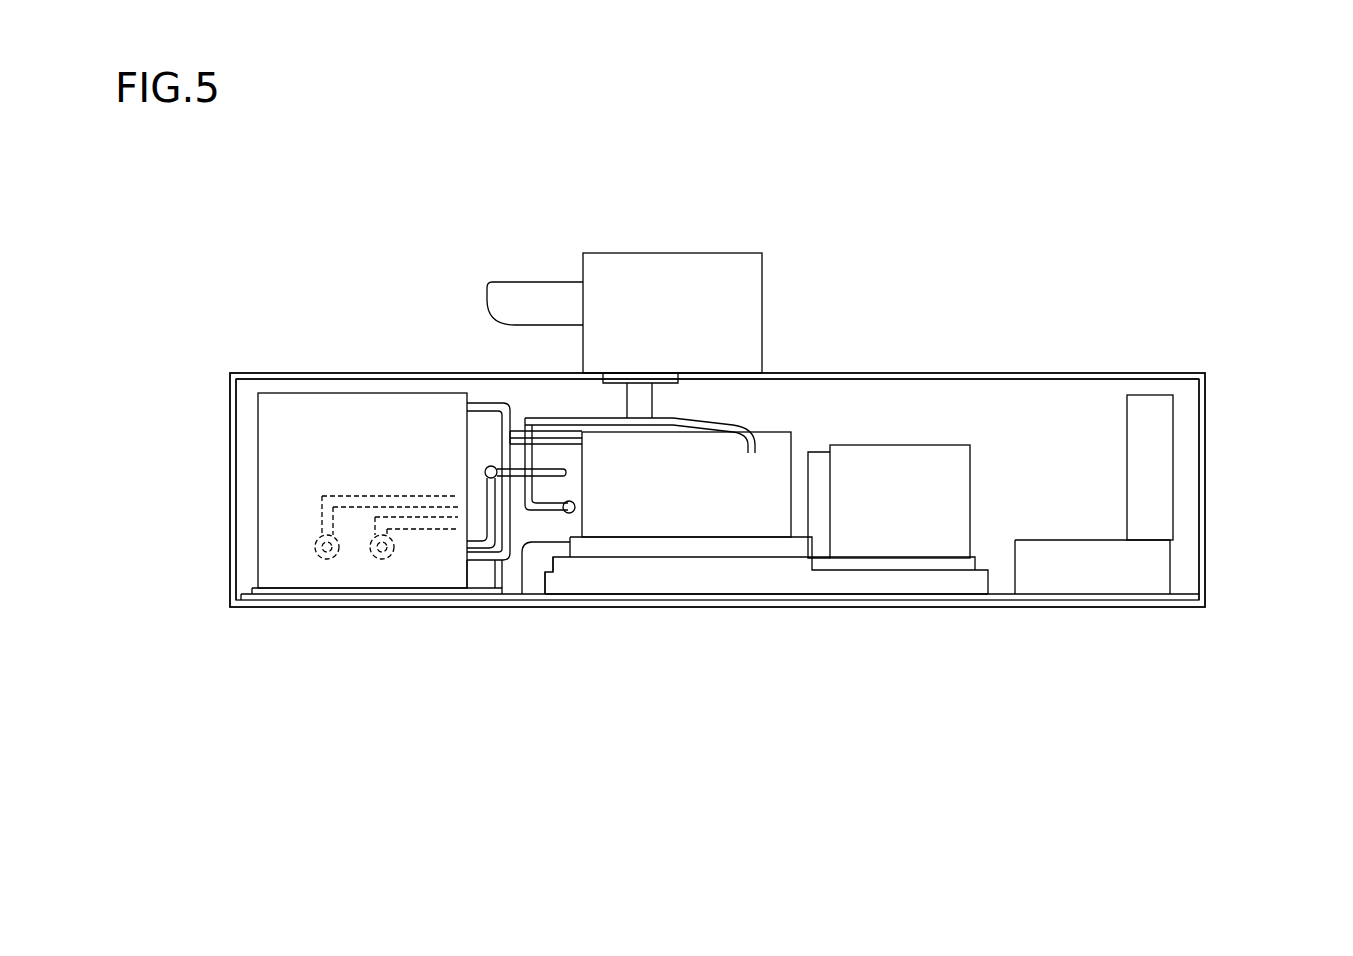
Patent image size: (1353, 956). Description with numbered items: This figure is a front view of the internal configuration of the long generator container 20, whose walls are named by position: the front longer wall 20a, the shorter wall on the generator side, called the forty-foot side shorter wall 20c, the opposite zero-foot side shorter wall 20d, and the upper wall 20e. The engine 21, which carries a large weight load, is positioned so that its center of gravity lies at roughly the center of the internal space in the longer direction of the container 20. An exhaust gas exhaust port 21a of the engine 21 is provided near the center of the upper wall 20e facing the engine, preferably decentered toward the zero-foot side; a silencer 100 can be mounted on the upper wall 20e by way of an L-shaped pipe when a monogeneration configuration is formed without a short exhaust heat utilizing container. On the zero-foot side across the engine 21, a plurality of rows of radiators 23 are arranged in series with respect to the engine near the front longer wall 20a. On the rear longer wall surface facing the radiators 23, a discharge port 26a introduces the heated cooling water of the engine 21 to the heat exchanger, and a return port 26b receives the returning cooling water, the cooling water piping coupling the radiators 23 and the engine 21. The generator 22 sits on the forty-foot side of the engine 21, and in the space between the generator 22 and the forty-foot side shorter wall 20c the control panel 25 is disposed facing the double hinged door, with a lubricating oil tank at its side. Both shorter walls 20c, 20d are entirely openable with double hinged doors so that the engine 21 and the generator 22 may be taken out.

The head unit 100 is at (664, 253).
The generator container 20 is at (1004, 301).
The front longer wall 20a is at (1066, 460).
The 40 f side shorter wall 20c is at (1209, 553).
The 0 f side shorter wall 20d is at (229, 511).
The upper wall 20e is at (918, 372).
The engine 21 is at (692, 508).
The exhaust gas exhaust port 21a is at (625, 403).
The generator 22 is at (905, 510).
The radiators 23 is at (346, 422).
The control panel 25 is at (1153, 437).
The discharge port 26a is at (382, 559).
The return port 26b is at (327, 559).